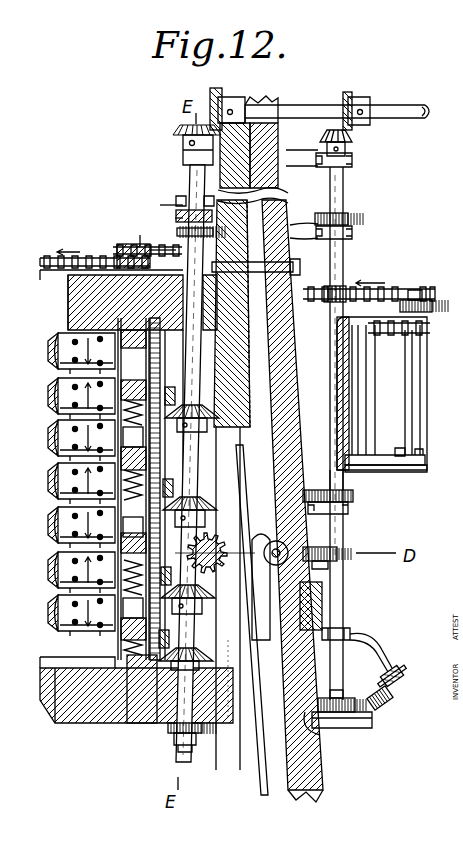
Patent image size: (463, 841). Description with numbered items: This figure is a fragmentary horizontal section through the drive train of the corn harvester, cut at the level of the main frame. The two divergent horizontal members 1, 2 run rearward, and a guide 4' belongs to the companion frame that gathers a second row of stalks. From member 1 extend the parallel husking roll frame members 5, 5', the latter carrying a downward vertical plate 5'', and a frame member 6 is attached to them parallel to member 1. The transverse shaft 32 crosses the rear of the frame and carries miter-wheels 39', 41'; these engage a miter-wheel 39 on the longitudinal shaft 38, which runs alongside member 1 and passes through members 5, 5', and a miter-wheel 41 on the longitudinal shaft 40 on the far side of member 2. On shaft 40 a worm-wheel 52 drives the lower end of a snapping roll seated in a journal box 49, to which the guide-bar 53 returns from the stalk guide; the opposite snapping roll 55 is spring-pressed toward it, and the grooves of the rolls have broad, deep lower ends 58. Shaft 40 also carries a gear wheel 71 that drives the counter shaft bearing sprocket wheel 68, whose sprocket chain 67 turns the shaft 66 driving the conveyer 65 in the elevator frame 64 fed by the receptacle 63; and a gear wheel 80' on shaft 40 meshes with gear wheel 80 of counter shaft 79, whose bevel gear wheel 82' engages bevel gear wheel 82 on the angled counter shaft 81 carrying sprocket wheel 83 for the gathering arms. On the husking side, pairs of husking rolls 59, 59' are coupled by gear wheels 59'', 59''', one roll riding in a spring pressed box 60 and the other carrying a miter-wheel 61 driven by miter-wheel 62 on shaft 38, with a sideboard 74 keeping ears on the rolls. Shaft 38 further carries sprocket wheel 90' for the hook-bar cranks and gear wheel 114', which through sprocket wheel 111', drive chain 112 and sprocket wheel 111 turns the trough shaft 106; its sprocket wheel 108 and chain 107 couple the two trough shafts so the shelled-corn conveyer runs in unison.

The horizontal member 1 is at (238, 405).
The horizontal member 2 is at (274, 151).
The transverse shaft 32 is at (300, 110).
The longitudinal shaft 38 is at (190, 195).
The miter-wheel 39 is at (180, 141).
The miter-wheel 39' is at (197, 106).
The longitudinal shaft 40 is at (345, 199).
The miter-wheel 41 is at (358, 148).
The miter-wheel 41' is at (358, 96).
The journal box 49 is at (275, 545).
The worm-wheel 52 is at (338, 556).
The guide-bar 53 is at (272, 750).
The snapping roll 55 is at (210, 525).
The lower ends of grooves 58 is at (20, 625).
The husking roll 59 is at (63, 443).
The husking roll 59' is at (62, 433).
The gear wheel 59'' is at (60, 412).
The gear wheel 59''' is at (70, 532).
The spring pressed box 60 is at (95, 318).
The miter-wheel 61 is at (225, 378).
The miter-wheel 62 is at (245, 402).
The receptacle 63 is at (420, 390).
The elevator frame 64 is at (390, 478).
The conveyer 65 is at (400, 428).
The shaft 66 is at (421, 360).
The sprocket chain 67 is at (385, 290).
The sprocket wheel 68 is at (338, 290).
The gear wheel 71 is at (350, 219).
The sideboard 74 is at (57, 672).
The counter shaft 79 is at (343, 608).
The gear wheel 80 is at (347, 503).
The gear wheel 80' is at (356, 480).
The counter shaft 81 is at (372, 700).
The bevel gear wheel 82 is at (349, 724).
The bevel gear wheel 82' is at (374, 649).
The sprocket wheel 83 is at (392, 686).
The sprocket wheel 90' is at (179, 751).
The rotative shaft 106 is at (125, 248).
The sprocket chain 107 is at (45, 265).
The sprocket wheel 108 is at (112, 258).
The sprocket wheel 111 is at (110, 223).
The sprocket wheel 111' is at (143, 189).
The drive chain 112 is at (142, 235).
The gear wheel 114' is at (149, 172).
The guide 4' is at (57, 592).
The husking roll frame member 5 is at (136, 513).
The husking roll frame member 5' is at (47, 302).
The vertical plate 5'' is at (22, 264).
The frame member 6 is at (125, 723).